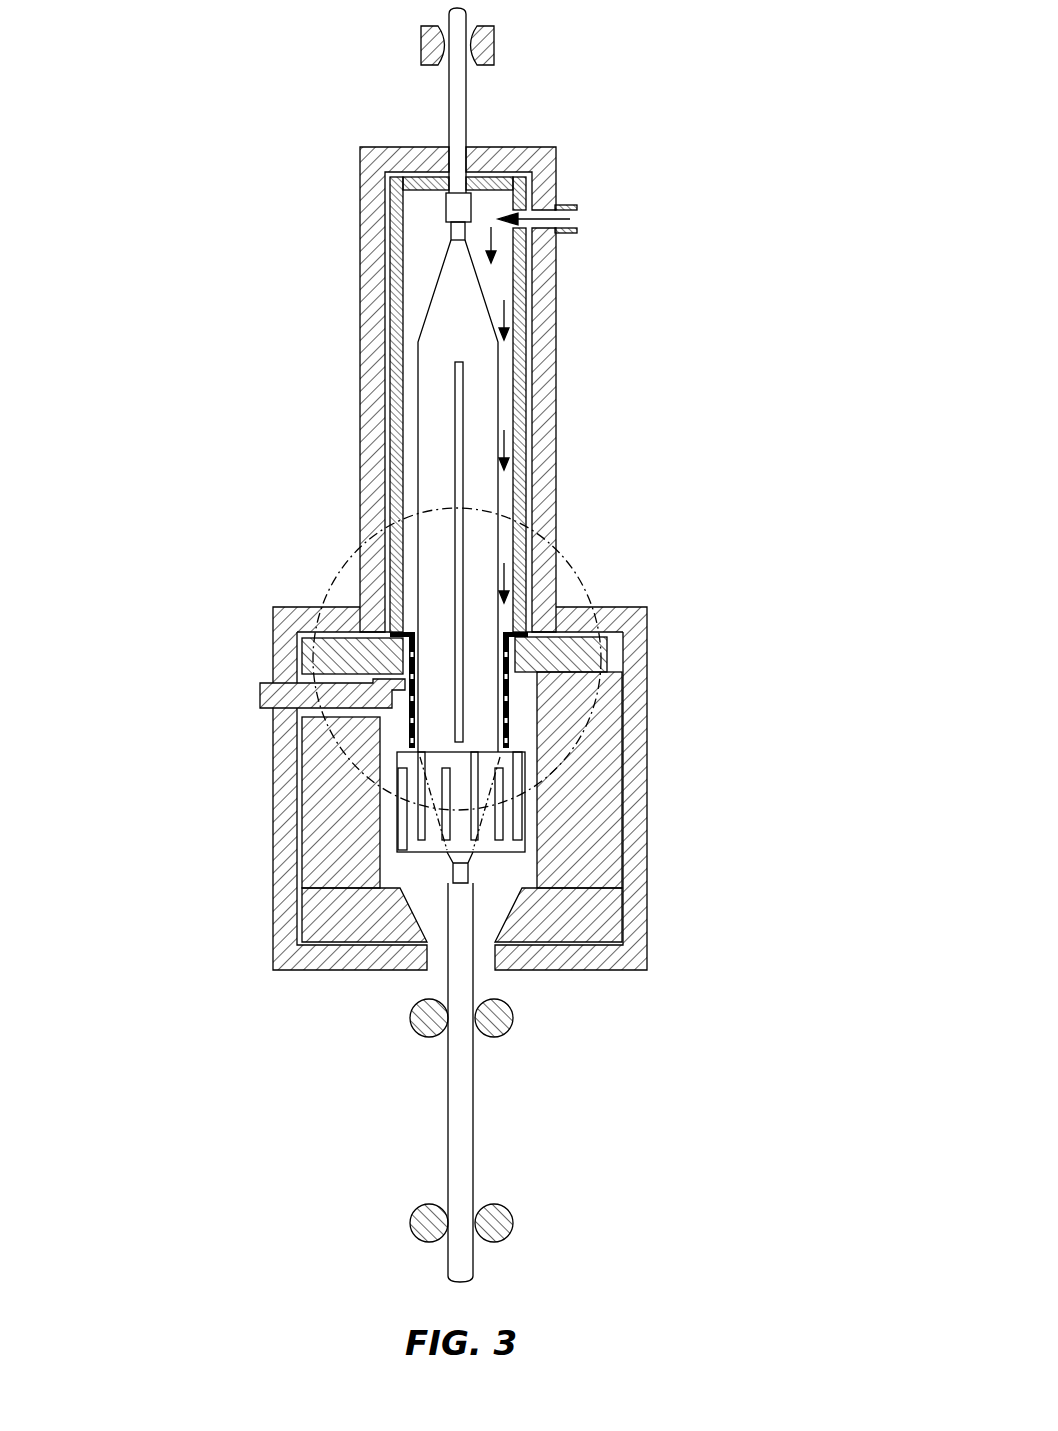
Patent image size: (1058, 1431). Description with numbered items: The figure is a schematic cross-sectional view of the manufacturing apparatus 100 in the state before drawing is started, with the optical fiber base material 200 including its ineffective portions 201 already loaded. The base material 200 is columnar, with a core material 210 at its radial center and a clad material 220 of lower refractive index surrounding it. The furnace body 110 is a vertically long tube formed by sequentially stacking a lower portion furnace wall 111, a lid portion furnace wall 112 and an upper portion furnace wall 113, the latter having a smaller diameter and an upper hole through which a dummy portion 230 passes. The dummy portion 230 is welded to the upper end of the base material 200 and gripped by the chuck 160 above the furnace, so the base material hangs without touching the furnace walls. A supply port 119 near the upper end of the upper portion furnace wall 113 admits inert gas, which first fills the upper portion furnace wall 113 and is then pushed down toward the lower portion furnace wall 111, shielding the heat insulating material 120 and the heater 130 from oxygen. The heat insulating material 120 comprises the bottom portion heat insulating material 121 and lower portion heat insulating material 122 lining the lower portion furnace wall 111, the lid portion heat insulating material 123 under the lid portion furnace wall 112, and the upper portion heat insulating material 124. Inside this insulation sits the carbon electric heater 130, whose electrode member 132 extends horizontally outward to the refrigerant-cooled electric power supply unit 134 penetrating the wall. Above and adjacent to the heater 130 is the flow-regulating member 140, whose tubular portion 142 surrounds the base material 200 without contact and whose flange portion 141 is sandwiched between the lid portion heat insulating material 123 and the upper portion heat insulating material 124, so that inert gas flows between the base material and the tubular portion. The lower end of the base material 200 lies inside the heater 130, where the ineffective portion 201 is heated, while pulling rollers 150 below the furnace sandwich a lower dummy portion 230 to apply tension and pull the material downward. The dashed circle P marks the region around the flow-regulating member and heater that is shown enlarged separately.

The manufacturing apparatus 100 is at (213, 186).
The furnace body 110 is at (253, 596).
The lower portion furnace wall 111 is at (272, 750).
The lid portion furnace wall 112 is at (272, 626).
The upper portion furnace wall 113 is at (362, 432).
The supply port 119 is at (577, 216).
The heat insulating material 120 is at (729, 453).
The bottom portion heat insulating material 121 is at (609, 911).
The lower portion heat insulating material 122 is at (613, 782).
The lid portion heat insulating material 123 is at (613, 652).
The upper portion heat insulating material 124 is at (527, 468).
The heater 130 is at (410, 855).
The electrode member 132 is at (387, 720).
The electric power supply unit 134 is at (258, 688).
The flow-regulating member 140 is at (228, 477).
The flange portion 141 is at (412, 632).
The tubular portion 142 is at (342, 640).
The pulling rollers 150 is at (545, 1003).
The chuck 160 is at (421, 42).
The optical fiber base material 200 is at (228, 220).
The ineffective portion 201 is at (398, 832).
The core material 210 is at (453, 383).
The clad material 220 is at (432, 298).
The dummy portion 230 is at (449, 115).
The circle P is at (566, 555).